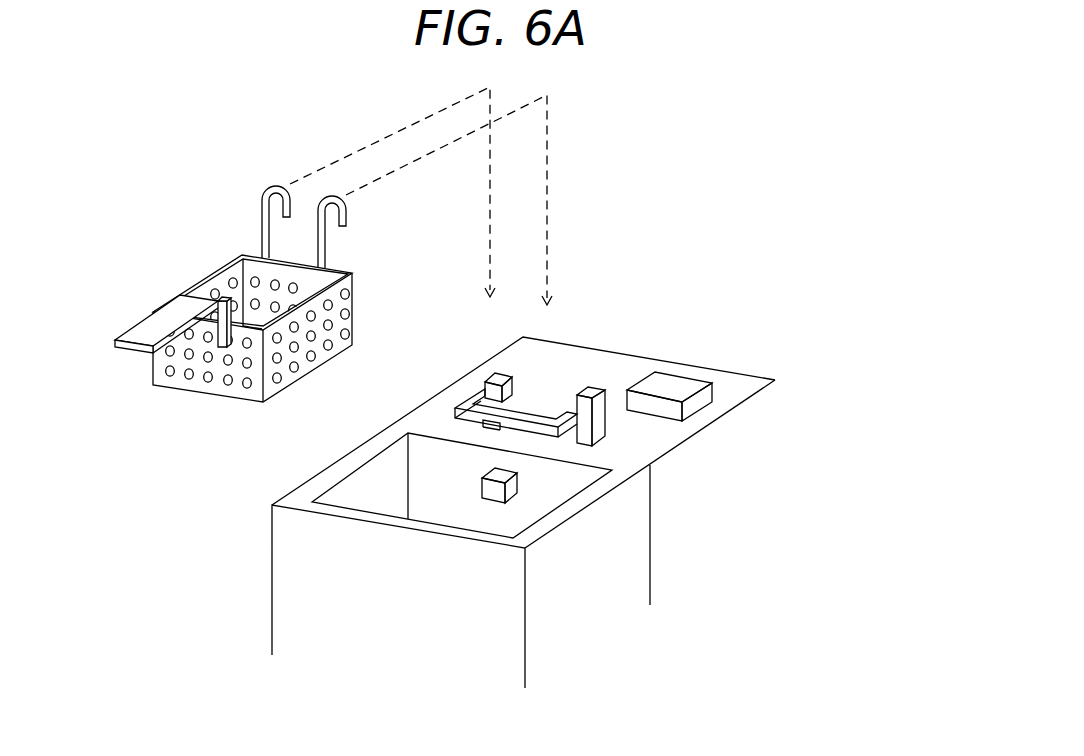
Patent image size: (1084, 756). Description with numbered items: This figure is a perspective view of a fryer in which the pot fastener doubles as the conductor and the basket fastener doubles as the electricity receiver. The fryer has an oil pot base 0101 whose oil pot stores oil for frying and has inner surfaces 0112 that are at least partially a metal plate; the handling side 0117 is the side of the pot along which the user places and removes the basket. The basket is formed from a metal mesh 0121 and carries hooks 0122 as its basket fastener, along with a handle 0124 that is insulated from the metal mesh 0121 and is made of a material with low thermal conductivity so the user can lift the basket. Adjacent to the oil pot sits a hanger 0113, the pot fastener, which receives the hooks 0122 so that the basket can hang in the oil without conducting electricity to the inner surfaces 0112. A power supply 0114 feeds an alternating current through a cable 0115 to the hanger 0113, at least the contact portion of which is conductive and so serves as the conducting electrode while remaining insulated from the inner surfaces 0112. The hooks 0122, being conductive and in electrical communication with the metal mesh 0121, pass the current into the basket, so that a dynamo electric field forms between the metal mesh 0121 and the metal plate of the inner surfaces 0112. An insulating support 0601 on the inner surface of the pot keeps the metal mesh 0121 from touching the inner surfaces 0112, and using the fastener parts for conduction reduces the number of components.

The oil pot base 0101 is at (607, 485).
The inner surfaces 0112 is at (450, 502).
The hanger 0113 is at (505, 375).
The power supply 0114 is at (679, 392).
The cable 0115 is at (611, 408).
The handling side 0117 is at (356, 553).
The metal mesh 0121 is at (353, 270).
The hooks 0122 is at (349, 200).
The handle 0124 is at (157, 324).
The insulating support 0601 is at (478, 489).